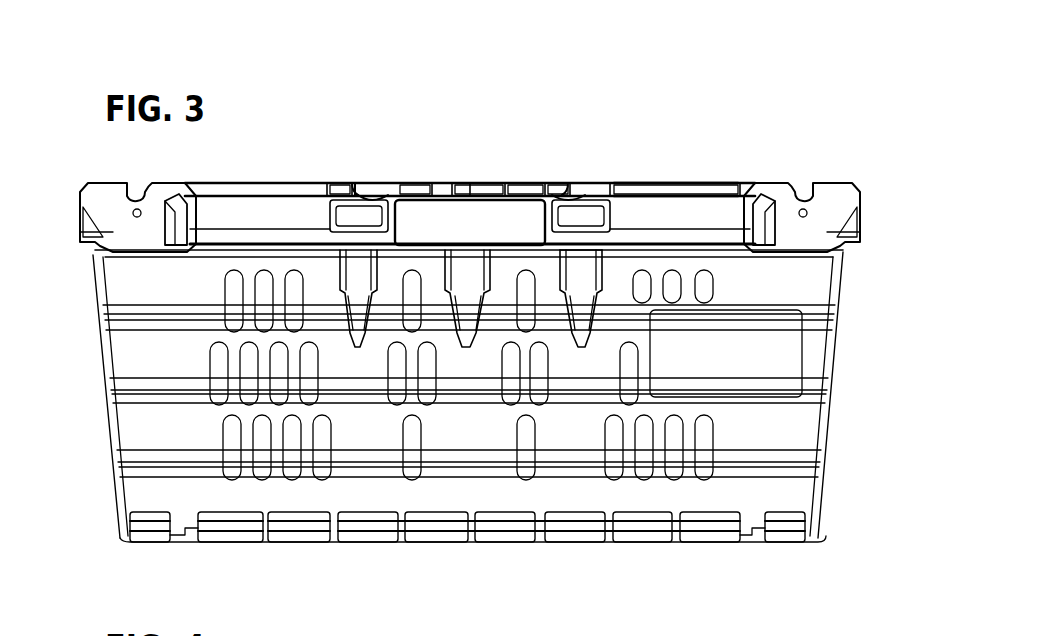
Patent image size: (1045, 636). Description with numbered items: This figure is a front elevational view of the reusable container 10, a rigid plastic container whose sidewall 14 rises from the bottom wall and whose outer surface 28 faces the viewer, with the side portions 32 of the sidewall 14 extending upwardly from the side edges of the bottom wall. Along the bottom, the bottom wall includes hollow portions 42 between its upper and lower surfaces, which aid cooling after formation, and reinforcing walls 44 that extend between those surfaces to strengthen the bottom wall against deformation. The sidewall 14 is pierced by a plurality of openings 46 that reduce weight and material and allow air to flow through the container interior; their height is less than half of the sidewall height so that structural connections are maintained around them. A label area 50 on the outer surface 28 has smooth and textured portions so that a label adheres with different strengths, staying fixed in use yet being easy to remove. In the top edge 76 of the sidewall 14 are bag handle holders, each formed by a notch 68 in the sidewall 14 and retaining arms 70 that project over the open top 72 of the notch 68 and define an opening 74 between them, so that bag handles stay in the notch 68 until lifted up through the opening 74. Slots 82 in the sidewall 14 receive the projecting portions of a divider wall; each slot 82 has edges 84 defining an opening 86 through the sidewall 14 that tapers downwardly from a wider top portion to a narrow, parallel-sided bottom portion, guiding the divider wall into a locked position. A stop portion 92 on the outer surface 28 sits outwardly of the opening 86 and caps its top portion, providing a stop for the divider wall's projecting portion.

The reusable container 10 is at (800, 126).
The sidewall portion 14 is at (723, 492).
The outer surface 28 is at (130, 360).
The side portions 32 is at (800, 436).
The hollow portions 42 is at (250, 526).
The reinforcing walls 44 is at (340, 526).
The openings 46 is at (530, 470).
The label area 50 is at (778, 353).
The notch 68 is at (355, 183).
The retaining arms 70 is at (352, 183).
The open top 72 is at (385, 196).
The opening 74 is at (576, 180).
The top edge 76 is at (702, 183).
The slots 82 is at (366, 340).
The edges 84 is at (480, 340).
The opening 86 is at (577, 316).
The stop portion 92 is at (580, 275).